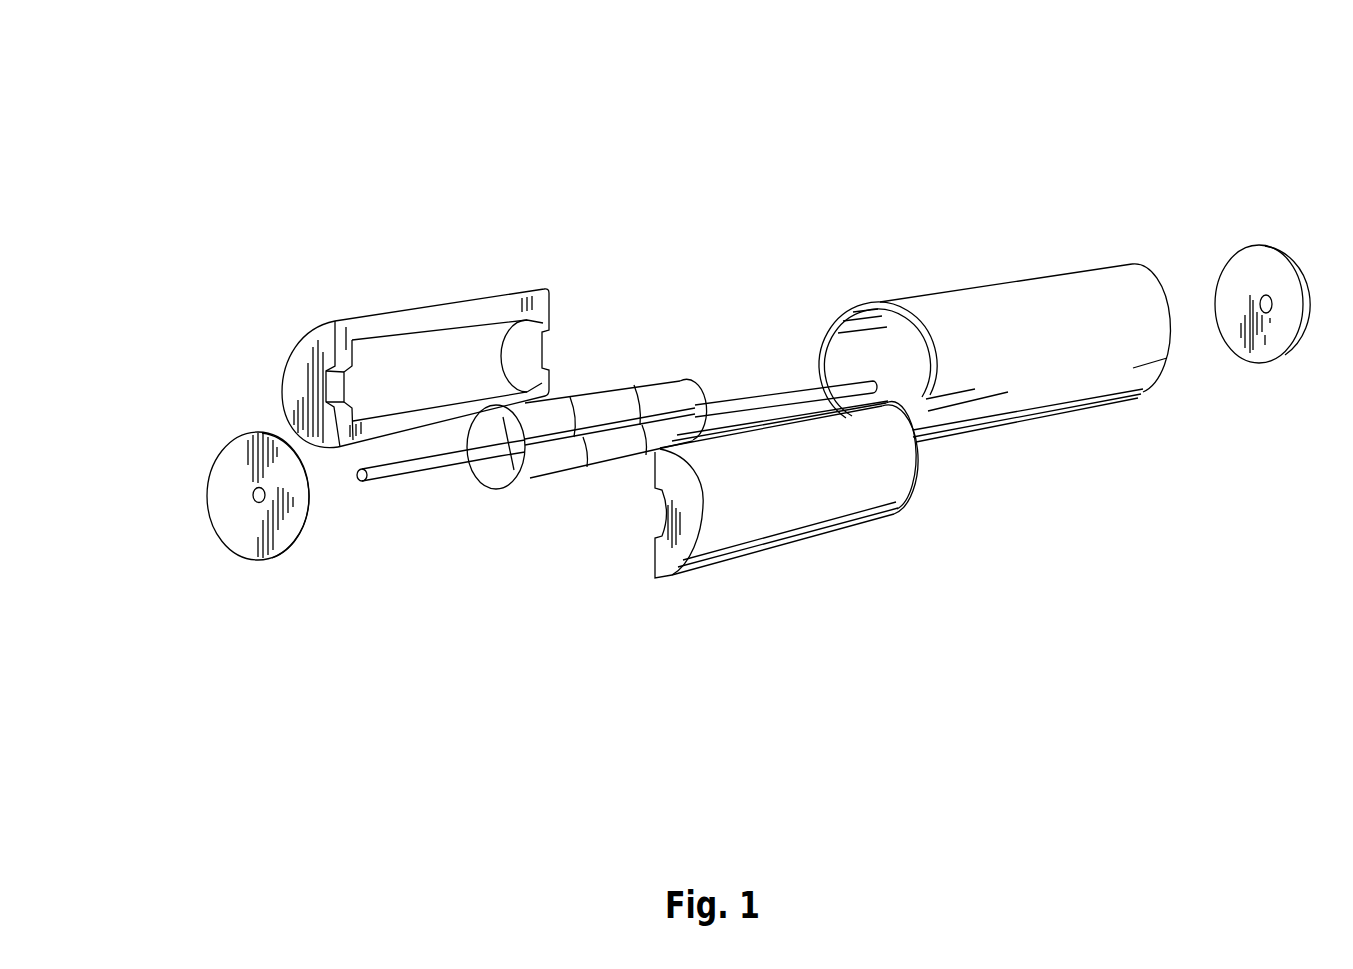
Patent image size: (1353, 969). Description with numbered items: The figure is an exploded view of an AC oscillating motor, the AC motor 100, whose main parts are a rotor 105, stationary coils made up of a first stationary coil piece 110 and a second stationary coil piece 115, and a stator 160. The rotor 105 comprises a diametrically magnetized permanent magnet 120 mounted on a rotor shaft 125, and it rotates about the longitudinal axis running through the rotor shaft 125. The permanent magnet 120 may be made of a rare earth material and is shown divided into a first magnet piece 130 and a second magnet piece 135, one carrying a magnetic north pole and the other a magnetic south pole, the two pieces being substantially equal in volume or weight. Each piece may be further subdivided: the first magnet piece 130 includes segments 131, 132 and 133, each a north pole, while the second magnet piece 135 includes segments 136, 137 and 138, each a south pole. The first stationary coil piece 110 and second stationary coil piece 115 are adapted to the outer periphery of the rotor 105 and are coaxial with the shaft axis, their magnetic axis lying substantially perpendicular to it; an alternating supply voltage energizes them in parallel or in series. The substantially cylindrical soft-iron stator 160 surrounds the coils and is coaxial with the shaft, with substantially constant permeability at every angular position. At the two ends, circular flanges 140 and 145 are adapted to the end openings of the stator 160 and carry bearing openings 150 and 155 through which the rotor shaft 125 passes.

The AC motor 100 is at (953, 62).
The rotor 105 is at (588, 333).
The first stationary coil piece 110 is at (433, 320).
The second stationary coil piece 115 is at (720, 530).
The diametrically magnetized permanent magnet 120 is at (615, 389).
The rotor shaft 125 is at (412, 462).
The first magnet piece 130 is at (483, 480).
The segment 131 is at (537, 467).
The segment 132 is at (591, 460).
The segment 133 is at (646, 449).
The second magnet piece 135 is at (527, 468).
The segment 136 is at (525, 435).
The segment 137 is at (588, 424).
The segment 138 is at (641, 413).
The flange 140 is at (243, 530).
The flange 145 is at (1272, 342).
The bearing opening 150 is at (256, 490).
The bearing opening 155 is at (1263, 296).
The stator 160 is at (957, 320).